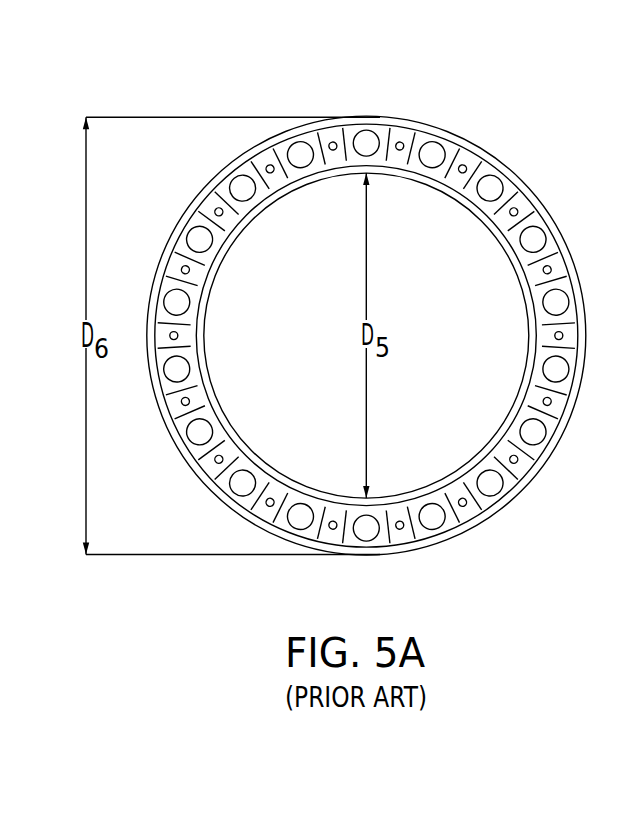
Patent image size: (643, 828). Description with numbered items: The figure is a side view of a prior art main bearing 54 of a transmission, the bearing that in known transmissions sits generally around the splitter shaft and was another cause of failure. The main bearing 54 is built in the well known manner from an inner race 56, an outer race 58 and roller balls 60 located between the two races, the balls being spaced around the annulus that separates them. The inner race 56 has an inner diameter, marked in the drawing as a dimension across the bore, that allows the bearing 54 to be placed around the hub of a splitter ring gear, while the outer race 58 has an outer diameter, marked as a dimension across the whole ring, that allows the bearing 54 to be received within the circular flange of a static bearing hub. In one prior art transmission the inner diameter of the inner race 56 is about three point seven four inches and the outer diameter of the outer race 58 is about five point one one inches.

The main bearing 54 is at (358, 292).
The inner race 56 is at (237, 231).
The outer race 58 is at (193, 209).
The roller balls 60 is at (184, 302).